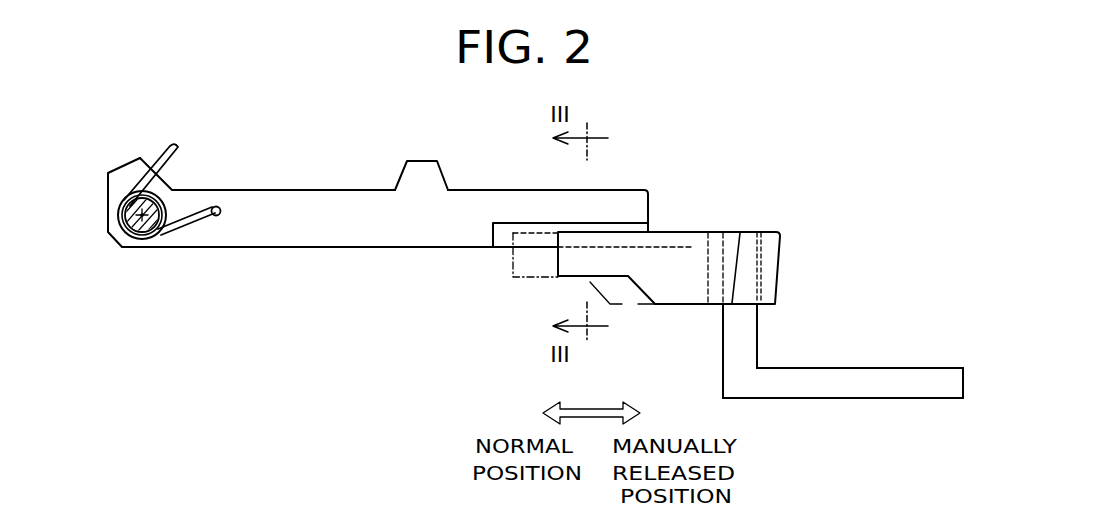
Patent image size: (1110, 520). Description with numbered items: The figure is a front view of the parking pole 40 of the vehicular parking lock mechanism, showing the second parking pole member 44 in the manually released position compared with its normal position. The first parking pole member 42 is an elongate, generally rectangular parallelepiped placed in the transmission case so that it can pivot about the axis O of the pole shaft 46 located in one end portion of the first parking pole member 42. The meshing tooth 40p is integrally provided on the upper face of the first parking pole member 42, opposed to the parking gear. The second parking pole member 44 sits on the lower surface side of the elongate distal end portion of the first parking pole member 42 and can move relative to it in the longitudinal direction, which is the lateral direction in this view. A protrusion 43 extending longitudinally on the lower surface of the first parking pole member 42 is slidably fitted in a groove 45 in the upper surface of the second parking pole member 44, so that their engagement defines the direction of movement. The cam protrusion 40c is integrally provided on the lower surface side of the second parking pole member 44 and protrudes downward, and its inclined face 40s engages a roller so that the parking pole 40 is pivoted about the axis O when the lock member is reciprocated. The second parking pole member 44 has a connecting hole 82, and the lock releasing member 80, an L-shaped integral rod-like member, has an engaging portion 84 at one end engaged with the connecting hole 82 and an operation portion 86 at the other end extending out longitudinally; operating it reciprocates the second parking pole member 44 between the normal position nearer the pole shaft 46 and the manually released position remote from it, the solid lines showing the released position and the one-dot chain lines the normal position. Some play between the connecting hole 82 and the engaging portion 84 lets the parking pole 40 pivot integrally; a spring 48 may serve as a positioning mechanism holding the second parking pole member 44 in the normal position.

The parking pole 40 is at (708, 143).
The meshing tooth 40p is at (417, 175).
The cam protrusion 40c is at (670, 288).
The inclined face 40s is at (641, 287).
The first parking pole member 42 is at (347, 232).
The protrusion 43 is at (507, 238).
The second parking pole member 44 is at (624, 256).
The groove 45 is at (670, 232).
The pole shaft 46 is at (160, 238).
The spring 48 is at (137, 165).
The axis O is at (120, 240).
The lock releasing member 80 is at (800, 410).
The connecting hole 82 is at (753, 250).
The engaging portion 84 is at (742, 331).
The operation portion 86 is at (903, 383).